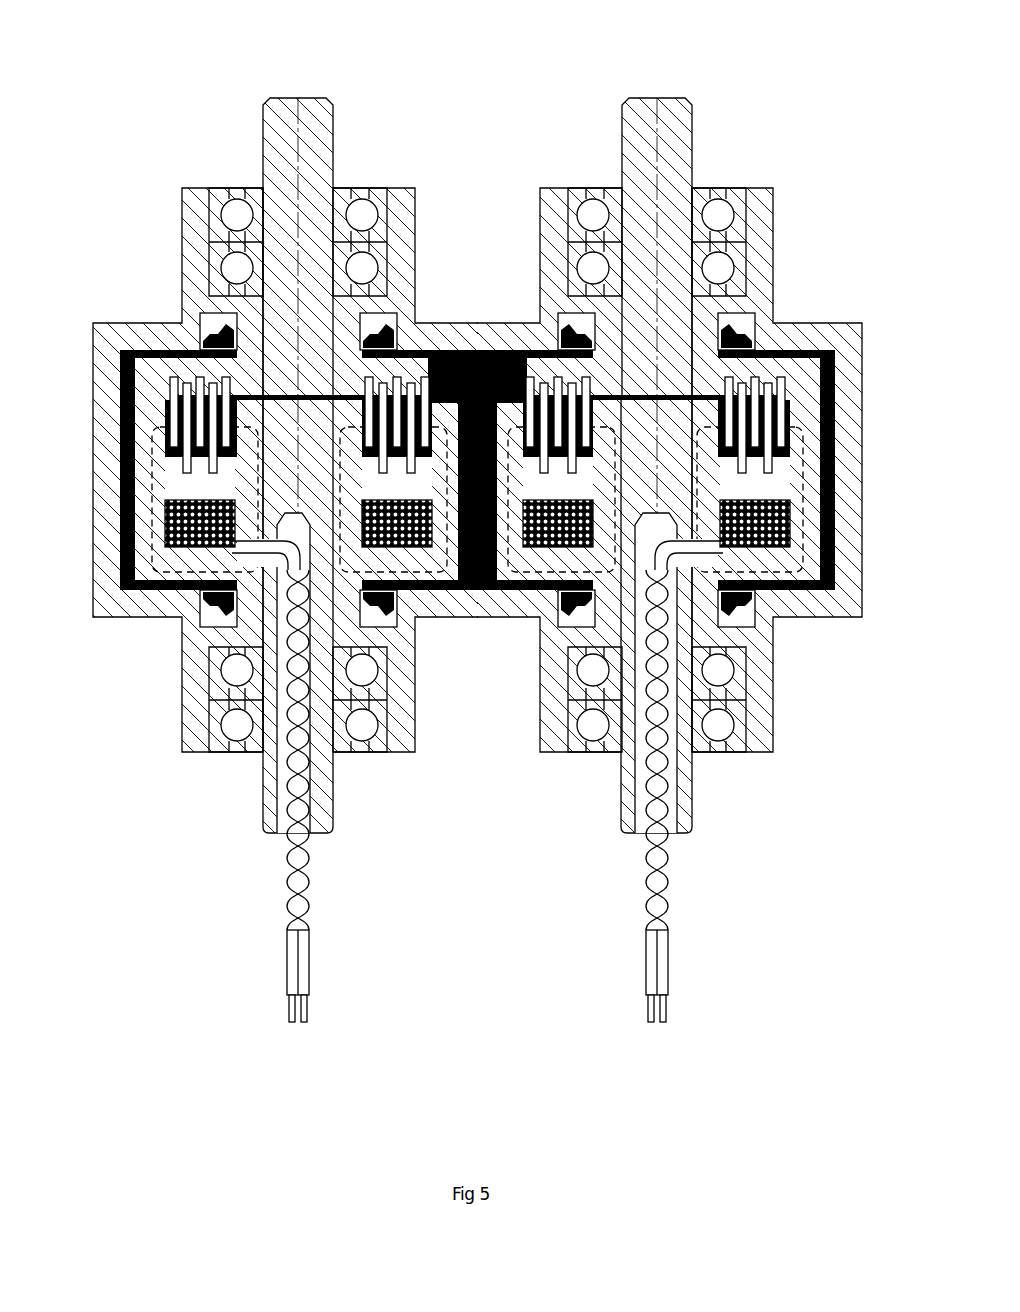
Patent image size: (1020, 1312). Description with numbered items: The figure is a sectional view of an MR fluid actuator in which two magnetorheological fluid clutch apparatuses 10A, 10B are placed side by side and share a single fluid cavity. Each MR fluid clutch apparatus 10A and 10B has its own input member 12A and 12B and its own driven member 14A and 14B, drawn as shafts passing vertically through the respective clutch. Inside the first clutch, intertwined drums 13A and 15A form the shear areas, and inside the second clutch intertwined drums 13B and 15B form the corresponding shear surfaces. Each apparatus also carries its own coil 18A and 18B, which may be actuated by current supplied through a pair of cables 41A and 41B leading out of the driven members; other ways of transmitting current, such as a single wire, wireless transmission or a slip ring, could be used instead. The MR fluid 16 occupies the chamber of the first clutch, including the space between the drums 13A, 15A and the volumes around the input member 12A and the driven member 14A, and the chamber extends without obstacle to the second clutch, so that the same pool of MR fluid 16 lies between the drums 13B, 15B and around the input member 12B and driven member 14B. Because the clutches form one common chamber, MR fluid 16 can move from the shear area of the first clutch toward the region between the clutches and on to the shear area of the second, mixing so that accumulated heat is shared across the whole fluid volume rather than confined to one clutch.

The MR fluid clutch apparatus 10A is at (147, 278).
The MR fluid clutch apparatus 10B is at (800, 265).
The input member 12A is at (296, 138).
The input member 12B is at (645, 118).
The drums 13A is at (224, 383).
The drums 13B is at (733, 385).
The driven member 14A is at (263, 770).
The driven member 14B is at (628, 812).
The drums 15A is at (208, 460).
The drums 15B is at (740, 450).
The MR fluid 16 is at (530, 455).
The coil 18A is at (190, 540).
The coil 18B is at (770, 535).
The pair of cables 41A is at (292, 969).
The pair of cables 41B is at (645, 968).